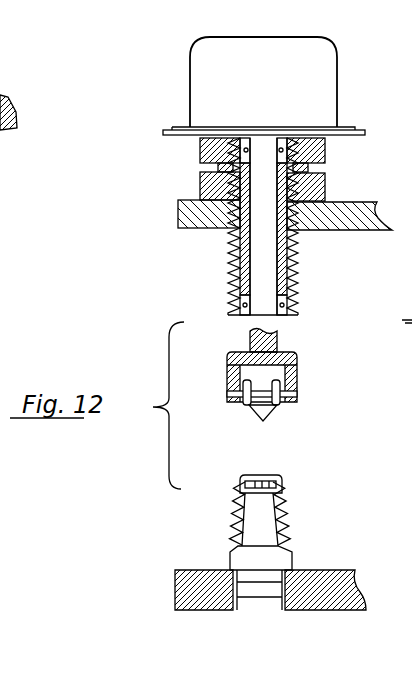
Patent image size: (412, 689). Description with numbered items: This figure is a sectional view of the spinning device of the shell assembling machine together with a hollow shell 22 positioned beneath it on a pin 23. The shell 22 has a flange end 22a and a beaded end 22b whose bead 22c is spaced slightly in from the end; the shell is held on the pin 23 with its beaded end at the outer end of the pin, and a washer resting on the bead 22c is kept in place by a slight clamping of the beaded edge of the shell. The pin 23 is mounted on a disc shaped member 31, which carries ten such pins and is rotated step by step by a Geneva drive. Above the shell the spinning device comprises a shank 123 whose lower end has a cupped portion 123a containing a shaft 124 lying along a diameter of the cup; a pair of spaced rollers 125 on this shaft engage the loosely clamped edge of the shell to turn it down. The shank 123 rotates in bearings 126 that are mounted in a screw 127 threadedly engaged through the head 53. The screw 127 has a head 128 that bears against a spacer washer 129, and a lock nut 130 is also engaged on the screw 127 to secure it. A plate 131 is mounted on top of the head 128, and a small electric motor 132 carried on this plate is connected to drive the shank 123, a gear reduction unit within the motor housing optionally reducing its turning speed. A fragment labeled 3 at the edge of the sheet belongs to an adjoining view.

The adjacent figure fragment 3 is at (8, 105).
The hollow shell 22 is at (288, 505).
The flange end 22a is at (232, 535).
The beaded end 22b is at (280, 478).
The bead 22c is at (243, 486).
The pin 23 is at (267, 563).
The disc shaped member 31 is at (330, 580).
The head 53 is at (360, 212).
The shank 123 is at (270, 331).
The cupped portion 123a is at (272, 372).
The shaft 124 is at (297, 392).
The rollers 125 is at (261, 422).
The bearings 126 is at (281, 144).
The screw 127 is at (298, 252).
The head of screw 128 is at (325, 154).
The spacer washer 129 is at (310, 170).
The lock nut 130 is at (200, 182).
The plate 131 is at (165, 131).
The electric motor 132 is at (323, 88).